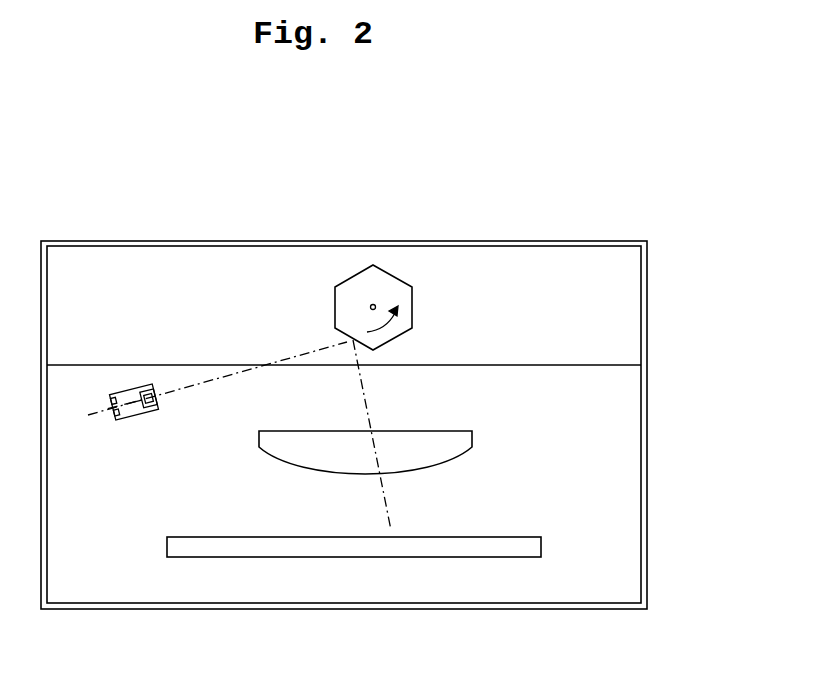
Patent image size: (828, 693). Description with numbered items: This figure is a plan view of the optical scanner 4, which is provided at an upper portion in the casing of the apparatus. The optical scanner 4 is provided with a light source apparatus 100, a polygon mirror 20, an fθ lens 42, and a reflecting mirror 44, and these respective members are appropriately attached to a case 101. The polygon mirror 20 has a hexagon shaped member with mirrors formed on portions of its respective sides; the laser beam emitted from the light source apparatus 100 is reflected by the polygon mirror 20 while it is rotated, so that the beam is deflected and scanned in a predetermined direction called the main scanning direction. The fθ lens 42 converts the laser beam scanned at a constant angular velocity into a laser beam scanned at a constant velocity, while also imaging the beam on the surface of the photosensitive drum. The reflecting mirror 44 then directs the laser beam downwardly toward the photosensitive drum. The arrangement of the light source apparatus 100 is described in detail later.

The optical scanner 4 is at (560, 203).
The case 101 is at (648, 287).
The polygon mirror 20 is at (390, 273).
The light source apparatus 100 is at (120, 393).
The fθ lens 42 is at (435, 431).
The reflecting mirror 44 is at (453, 558).